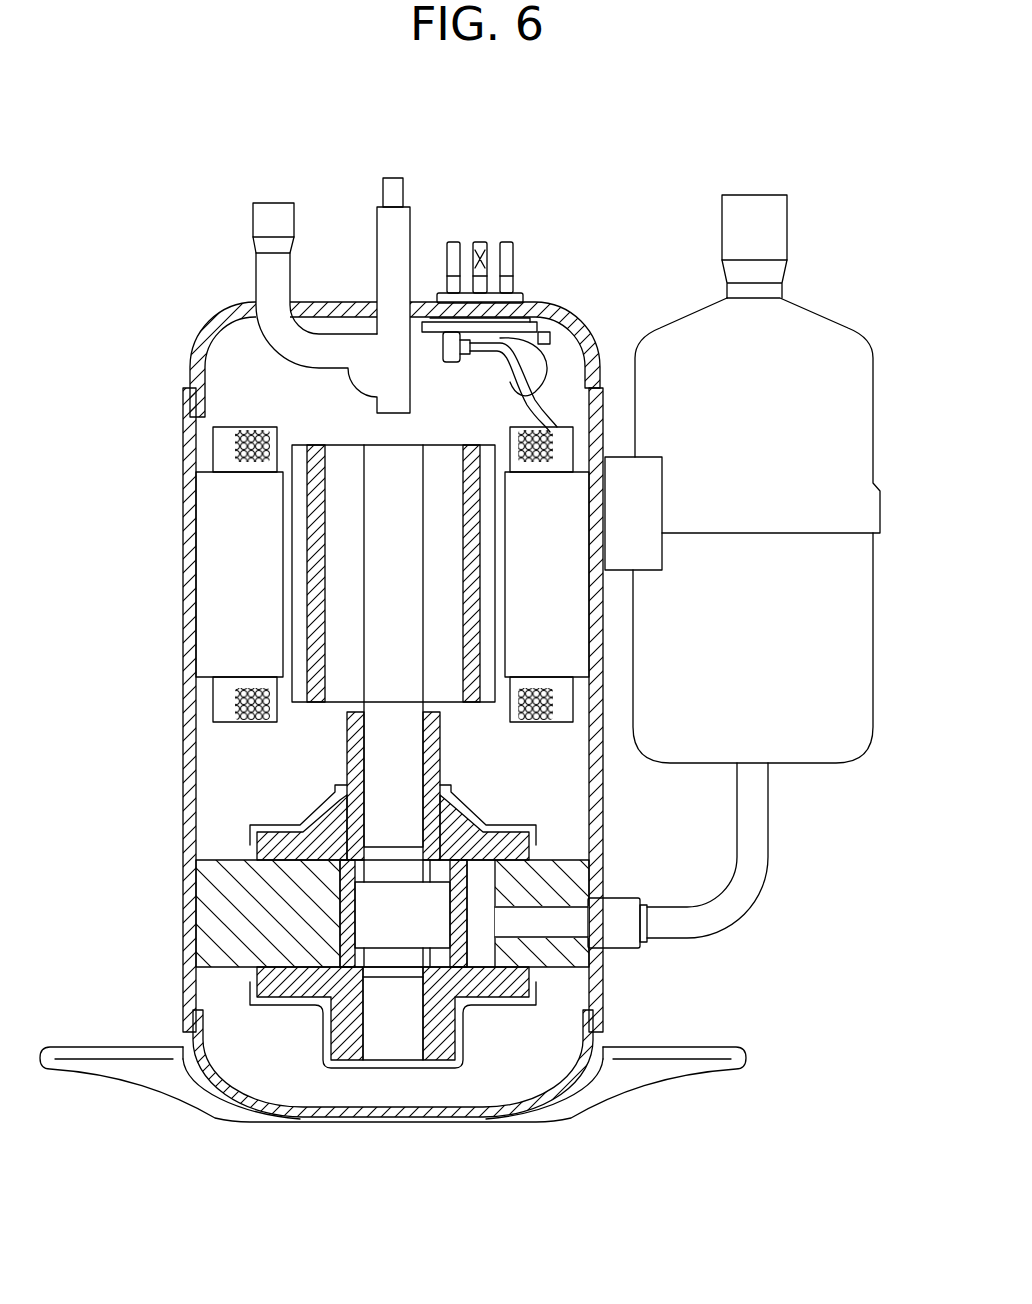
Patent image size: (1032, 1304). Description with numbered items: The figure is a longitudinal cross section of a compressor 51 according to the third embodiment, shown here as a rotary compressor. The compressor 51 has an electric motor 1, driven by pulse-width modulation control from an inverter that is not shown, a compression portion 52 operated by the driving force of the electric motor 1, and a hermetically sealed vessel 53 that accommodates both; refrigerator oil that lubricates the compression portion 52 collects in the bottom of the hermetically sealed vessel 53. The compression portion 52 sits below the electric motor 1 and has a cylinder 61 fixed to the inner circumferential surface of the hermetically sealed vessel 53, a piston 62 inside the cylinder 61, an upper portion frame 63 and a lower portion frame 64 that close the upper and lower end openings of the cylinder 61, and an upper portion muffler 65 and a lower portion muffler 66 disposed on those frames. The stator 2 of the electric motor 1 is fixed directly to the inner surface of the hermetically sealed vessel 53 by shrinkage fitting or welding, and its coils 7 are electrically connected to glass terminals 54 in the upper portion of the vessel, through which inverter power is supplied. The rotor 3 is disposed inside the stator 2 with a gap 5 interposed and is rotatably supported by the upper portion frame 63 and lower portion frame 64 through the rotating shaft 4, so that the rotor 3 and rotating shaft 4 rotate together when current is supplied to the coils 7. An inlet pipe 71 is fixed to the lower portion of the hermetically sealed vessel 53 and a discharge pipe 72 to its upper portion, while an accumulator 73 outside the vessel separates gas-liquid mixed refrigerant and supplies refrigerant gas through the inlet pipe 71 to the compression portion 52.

The electric motor 1 is at (307, 420).
The stator 2 is at (203, 422).
The rotor 3 is at (288, 565).
The rotating shaft 4 is at (380, 772).
The gap 5 is at (283, 681).
The coils 7 is at (247, 426).
The compressor 51 is at (158, 301).
The compression portion 52 is at (243, 1000).
The hermetically sealed vessel 53 is at (194, 342).
The glass terminals 54 is at (508, 244).
The cylinder 61 is at (210, 858).
The piston 62 is at (340, 900).
The upper portion frame 63 is at (498, 842).
The lower portion frame 64 is at (490, 992).
The upper portion muffler 65 is at (335, 817).
The lower portion muffler 66 is at (340, 1008).
The inlet pipe 71 is at (730, 917).
The discharge pipe 72 is at (254, 270).
The accumulator 73 is at (874, 377).